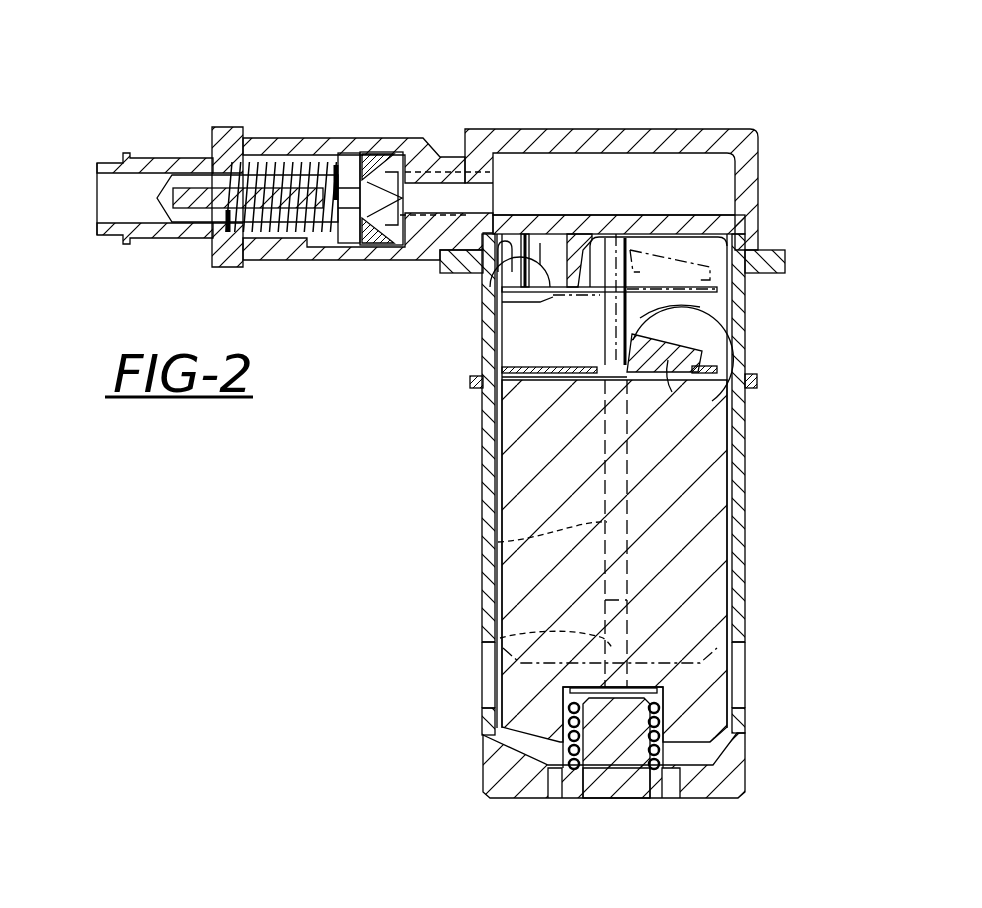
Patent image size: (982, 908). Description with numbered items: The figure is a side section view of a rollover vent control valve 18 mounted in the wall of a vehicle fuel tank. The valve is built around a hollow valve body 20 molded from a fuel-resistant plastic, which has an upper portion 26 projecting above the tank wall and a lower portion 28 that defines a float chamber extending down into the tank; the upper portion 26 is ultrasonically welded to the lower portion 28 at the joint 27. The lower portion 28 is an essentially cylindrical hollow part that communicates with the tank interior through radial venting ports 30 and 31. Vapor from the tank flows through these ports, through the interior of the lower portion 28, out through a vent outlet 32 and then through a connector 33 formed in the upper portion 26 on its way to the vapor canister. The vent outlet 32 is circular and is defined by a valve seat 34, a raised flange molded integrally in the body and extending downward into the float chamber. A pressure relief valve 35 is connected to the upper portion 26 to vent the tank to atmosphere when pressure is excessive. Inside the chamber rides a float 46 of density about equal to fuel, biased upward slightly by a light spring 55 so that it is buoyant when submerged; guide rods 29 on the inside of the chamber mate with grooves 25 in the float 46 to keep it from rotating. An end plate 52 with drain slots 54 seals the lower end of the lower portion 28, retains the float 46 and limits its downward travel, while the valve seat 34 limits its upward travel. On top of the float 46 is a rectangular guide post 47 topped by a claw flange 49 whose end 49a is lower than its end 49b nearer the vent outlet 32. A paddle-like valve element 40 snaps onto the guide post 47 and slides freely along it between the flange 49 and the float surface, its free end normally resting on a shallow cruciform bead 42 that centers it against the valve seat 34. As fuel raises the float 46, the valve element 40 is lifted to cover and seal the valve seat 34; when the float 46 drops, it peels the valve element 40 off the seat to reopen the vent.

The rollover vent control valve 18 is at (718, 114).
The hollow valve body 20 is at (742, 482).
The grooves 25 is at (482, 640).
The upper portion 26 is at (756, 165).
The ultrasonic weld 27 is at (760, 228).
The lower portion 28 is at (492, 580).
The guide rods 29 is at (498, 540).
The radial venting port 30 is at (492, 690).
The radial venting port 31 is at (480, 393).
The vent outlet 32 is at (490, 300).
The connector 33 is at (452, 172).
The valve seat 34 is at (520, 286).
The pressure relief valve 35 is at (293, 139).
The valve element 40 is at (500, 345).
The cruciform bead 42 is at (500, 420).
The float 46 is at (503, 476).
The guide post 47 is at (747, 420).
The claw flange 49 is at (720, 310).
The end of flange 49a is at (720, 347).
The end of flange 49b is at (740, 312).
The end plate 52 is at (490, 748).
The drain slots 54 is at (553, 803).
The spring 55 is at (660, 758).